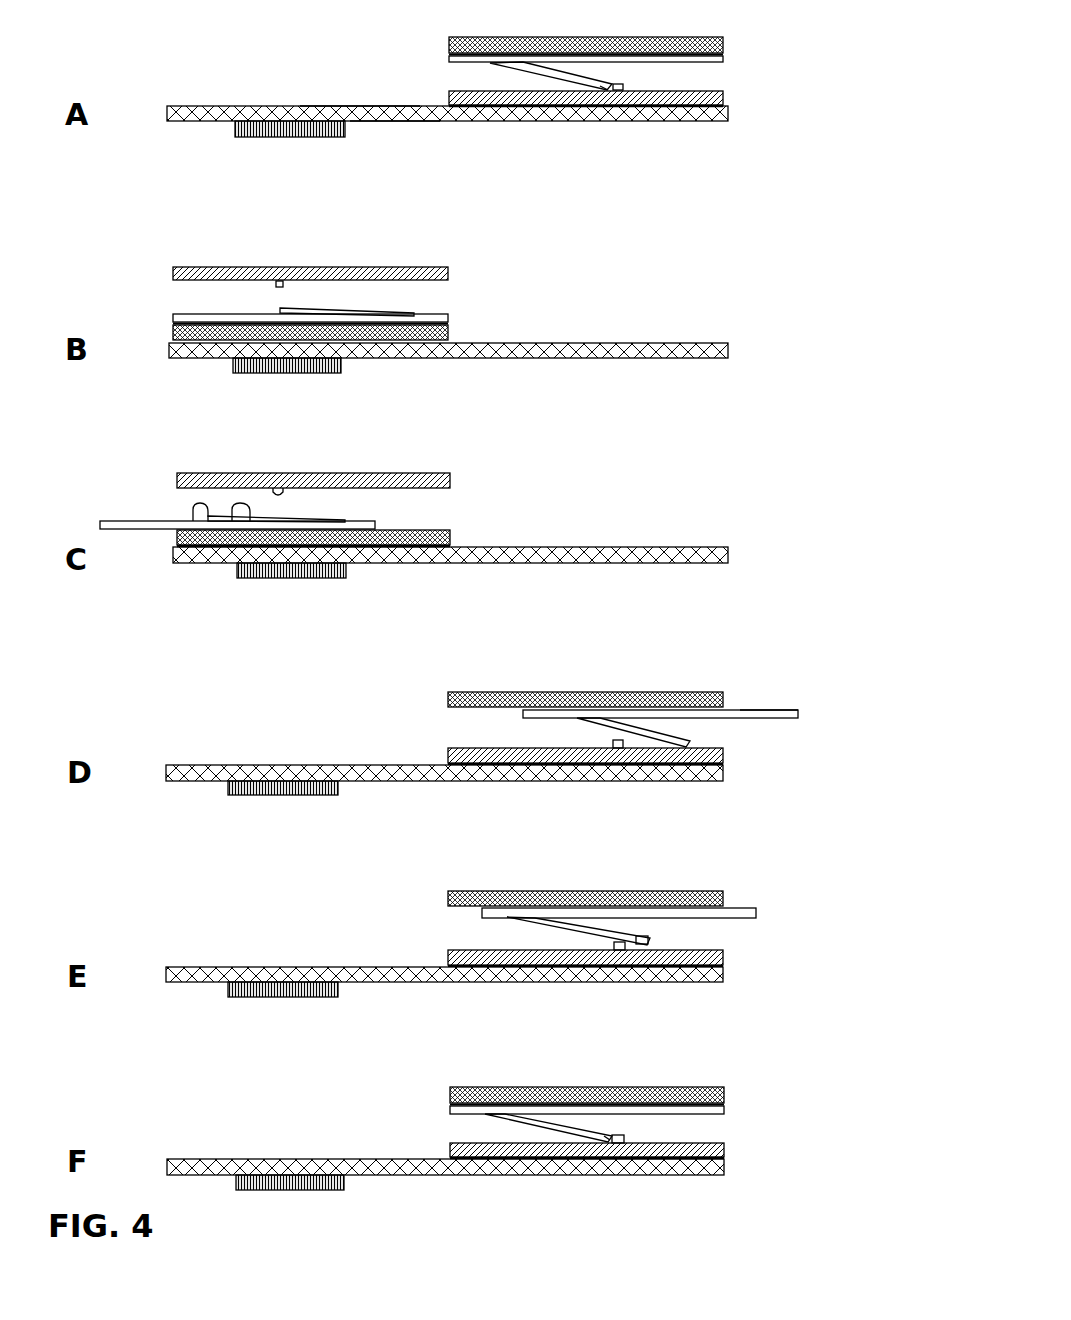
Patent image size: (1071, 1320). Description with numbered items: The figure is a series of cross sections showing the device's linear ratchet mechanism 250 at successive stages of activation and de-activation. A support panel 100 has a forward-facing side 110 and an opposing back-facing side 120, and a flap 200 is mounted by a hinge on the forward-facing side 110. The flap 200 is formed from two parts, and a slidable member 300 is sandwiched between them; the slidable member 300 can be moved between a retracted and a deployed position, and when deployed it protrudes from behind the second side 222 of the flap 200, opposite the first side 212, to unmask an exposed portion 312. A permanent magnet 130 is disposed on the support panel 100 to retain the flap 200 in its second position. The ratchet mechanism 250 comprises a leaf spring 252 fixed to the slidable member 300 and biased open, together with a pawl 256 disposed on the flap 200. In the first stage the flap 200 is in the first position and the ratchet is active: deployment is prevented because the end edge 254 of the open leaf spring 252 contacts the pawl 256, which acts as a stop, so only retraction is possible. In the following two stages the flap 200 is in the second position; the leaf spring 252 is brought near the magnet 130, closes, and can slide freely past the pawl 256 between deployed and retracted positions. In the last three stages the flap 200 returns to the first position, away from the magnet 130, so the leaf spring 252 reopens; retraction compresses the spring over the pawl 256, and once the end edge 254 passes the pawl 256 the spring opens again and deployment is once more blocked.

The support panel 100 is at (185, 122).
The forward-facing side 110 is at (343, 105).
The back-facing side 120 is at (371, 122).
The permanent magnet 130 is at (260, 138).
The flap 200 is at (727, 40).
The first side 212 is at (449, 44).
The second side 222 is at (468, 100).
The linear ratchet mechanism 250 is at (718, 75).
The leaf spring 252 is at (555, 78).
The end edge 254 is at (606, 90).
The pawl 256 is at (618, 91).
The slidable member 300 is at (449, 60).
The exposed portion 312 is at (765, 710).